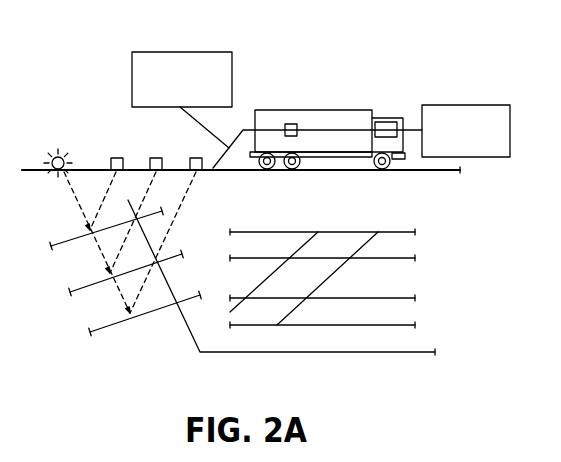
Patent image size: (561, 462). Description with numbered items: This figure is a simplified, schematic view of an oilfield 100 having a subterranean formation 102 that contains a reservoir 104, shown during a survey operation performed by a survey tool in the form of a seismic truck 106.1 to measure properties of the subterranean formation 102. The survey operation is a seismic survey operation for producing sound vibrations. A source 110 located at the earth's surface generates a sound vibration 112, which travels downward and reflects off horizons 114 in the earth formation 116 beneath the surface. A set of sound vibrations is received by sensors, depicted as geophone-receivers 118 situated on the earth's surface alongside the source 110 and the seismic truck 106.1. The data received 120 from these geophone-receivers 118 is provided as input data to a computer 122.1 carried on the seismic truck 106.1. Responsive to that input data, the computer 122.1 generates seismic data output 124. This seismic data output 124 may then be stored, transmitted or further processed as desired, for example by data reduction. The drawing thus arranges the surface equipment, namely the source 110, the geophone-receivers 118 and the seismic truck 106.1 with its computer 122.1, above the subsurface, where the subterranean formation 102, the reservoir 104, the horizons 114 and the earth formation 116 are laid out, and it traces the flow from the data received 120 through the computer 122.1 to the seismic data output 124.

The oilfield 100 is at (428, 78).
The subterranean formation 102 is at (402, 222).
The reservoir 104 is at (390, 287).
The seismic truck 106.1 is at (350, 110).
The source 110 is at (51, 159).
The sound vibration 112 is at (52, 198).
The horizons 114 is at (51, 243).
The earth formation 116 is at (190, 330).
The geophone-receivers 118 is at (190, 158).
The data received 120 is at (160, 52).
The computer 122.1 is at (291, 124).
The seismic data output 124 is at (482, 105).